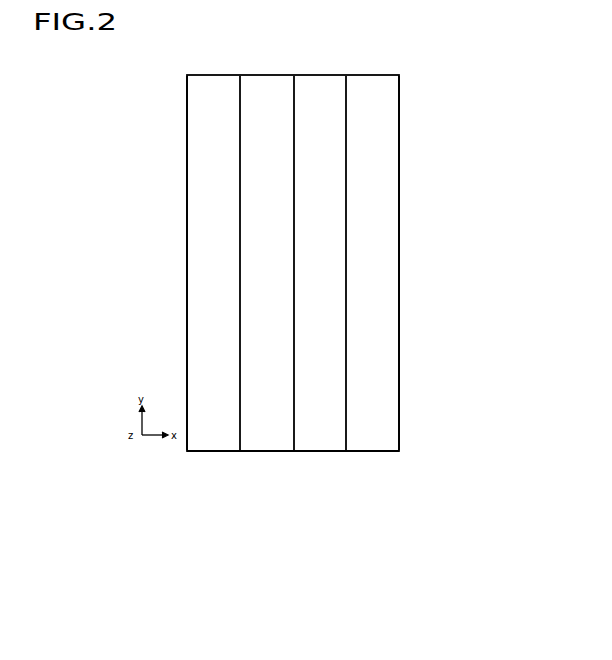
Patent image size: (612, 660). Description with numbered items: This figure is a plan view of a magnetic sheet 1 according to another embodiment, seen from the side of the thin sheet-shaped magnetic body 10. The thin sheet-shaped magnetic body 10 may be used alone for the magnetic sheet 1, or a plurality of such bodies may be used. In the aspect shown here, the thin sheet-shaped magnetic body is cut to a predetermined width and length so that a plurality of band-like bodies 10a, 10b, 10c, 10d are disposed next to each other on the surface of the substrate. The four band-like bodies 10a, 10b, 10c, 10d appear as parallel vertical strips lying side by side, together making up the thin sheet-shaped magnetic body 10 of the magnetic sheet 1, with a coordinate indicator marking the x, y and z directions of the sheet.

The magnetic sheet 1 is at (415, 205).
The thin sheet-shaped magnetic body 10 is at (395, 522).
The band-like body 10a is at (217, 440).
The band-like body 10b is at (270, 440).
The band-like body 10c is at (323, 440).
The band-like body 10d is at (375, 440).